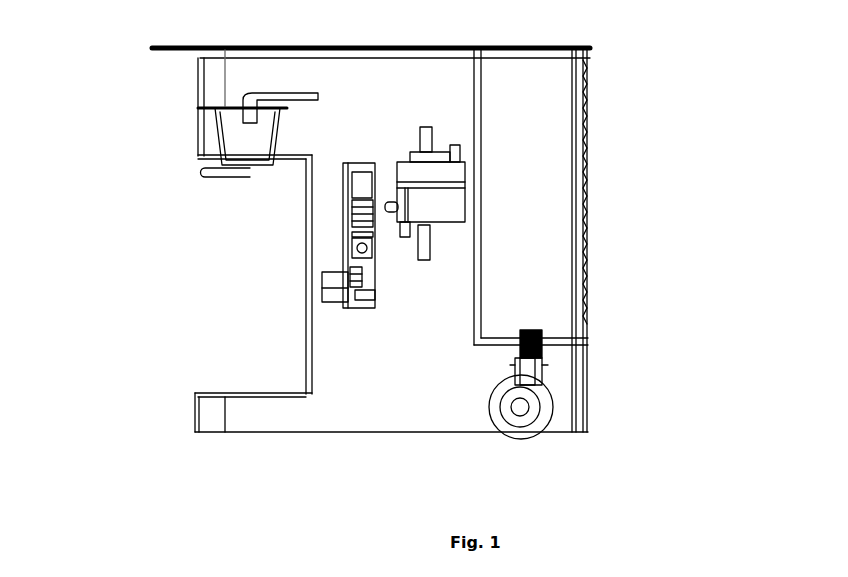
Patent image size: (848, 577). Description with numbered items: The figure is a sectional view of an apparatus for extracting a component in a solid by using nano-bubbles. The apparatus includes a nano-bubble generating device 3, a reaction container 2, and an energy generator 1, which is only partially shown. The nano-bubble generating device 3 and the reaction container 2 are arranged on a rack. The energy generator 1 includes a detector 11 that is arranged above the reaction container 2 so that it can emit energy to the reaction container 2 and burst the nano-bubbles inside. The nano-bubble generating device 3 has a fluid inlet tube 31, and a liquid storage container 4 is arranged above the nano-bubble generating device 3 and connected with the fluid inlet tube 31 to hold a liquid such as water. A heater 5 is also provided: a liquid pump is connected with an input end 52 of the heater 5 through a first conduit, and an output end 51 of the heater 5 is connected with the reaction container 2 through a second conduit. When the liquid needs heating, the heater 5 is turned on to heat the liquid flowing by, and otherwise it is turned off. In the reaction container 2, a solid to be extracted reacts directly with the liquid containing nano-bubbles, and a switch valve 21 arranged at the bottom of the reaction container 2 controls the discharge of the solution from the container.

The energy generator 1 is at (222, 136).
The reaction container 2 is at (218, 132).
The detector 11 is at (222, 136).
The switch valve 21 is at (250, 171).
The nano-bubble generating device 3 is at (637, 351).
The fluid inlet tube 31 is at (538, 333).
The liquid storage container 4 is at (556, 276).
The heater 5 is at (572, 139).
The output end 51 is at (435, 122).
The input end 52 is at (430, 255).